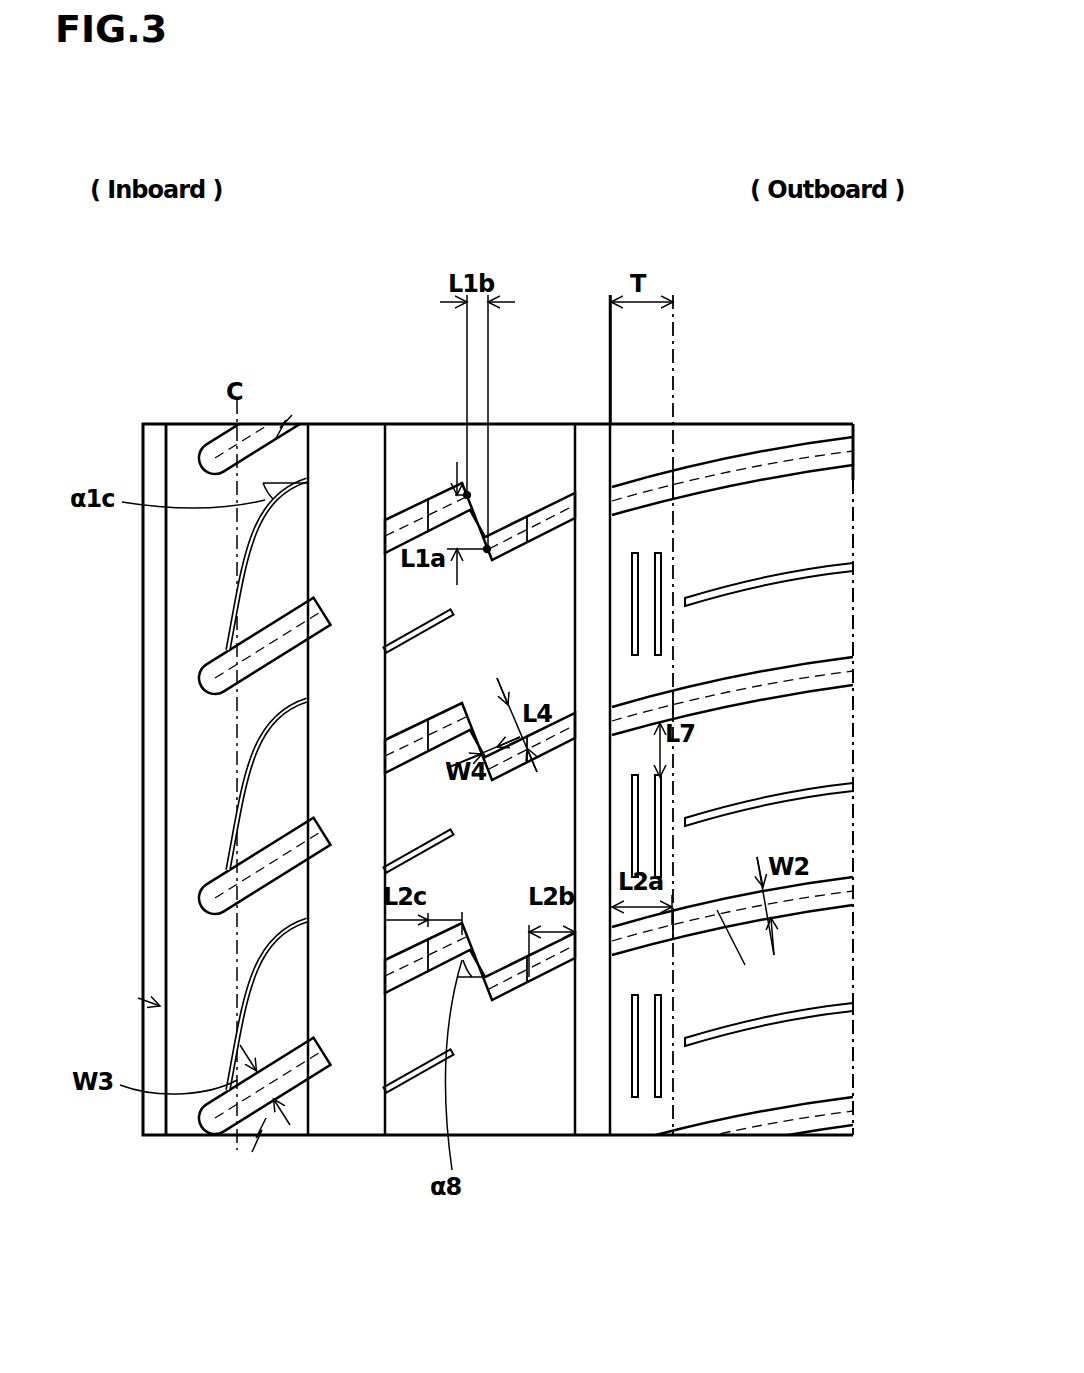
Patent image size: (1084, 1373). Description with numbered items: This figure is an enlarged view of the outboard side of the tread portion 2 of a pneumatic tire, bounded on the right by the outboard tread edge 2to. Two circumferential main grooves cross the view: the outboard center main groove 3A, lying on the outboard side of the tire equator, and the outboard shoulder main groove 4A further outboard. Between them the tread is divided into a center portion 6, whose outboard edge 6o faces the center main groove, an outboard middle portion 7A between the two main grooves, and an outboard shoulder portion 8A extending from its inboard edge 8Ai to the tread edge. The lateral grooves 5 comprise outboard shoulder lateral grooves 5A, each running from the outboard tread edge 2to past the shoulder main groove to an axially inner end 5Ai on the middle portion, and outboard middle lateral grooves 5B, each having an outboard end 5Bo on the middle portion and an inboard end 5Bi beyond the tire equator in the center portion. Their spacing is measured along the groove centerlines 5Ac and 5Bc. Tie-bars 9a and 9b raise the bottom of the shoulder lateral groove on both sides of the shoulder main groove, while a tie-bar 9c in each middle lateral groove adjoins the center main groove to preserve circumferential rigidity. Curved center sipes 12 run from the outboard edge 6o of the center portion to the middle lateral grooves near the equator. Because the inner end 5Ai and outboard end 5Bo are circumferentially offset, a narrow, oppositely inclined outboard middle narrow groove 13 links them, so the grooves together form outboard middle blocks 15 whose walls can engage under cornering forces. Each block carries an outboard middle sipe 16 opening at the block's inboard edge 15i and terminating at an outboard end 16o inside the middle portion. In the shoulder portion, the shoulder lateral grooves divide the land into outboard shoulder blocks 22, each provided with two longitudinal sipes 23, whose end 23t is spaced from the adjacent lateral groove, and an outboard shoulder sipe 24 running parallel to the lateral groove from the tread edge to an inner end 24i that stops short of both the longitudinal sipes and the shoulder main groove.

The tread portion 2 is at (812, 405).
The outboard tread edge 2to is at (853, 1075).
The outboard center main groove 3A is at (350, 1078).
The outboard shoulder main groove 4A is at (590, 1077).
The lateral grooves 5 is at (723, 913).
The outboard shoulder lateral groove 5A is at (785, 467).
The axially inner end of outboard shoulder lateral groove 5Ai is at (515, 505).
The groove centerline of outboard shoulder lateral groove 5Ac is at (753, 465).
The outboard middle lateral groove 5B is at (285, 600).
The inboard end of outboard middle lateral groove 5Bi is at (203, 1127).
The outboard end of outboard middle lateral groove 5Bo is at (466, 492).
The groove centerline of outboard middle lateral groove 5Bc is at (258, 630).
The center portion 6 is at (191, 470).
The outboard edge of center portion 6o is at (323, 424).
The outboard middle portion 7A is at (413, 455).
The outboard shoulder portion 8A is at (718, 518).
The inboard edge of outboard shoulder portion 8Ai is at (606, 455).
The tie-bar 9a is at (647, 485).
The tie-bar 9b is at (560, 962).
The tie-bar 9c is at (400, 970).
The center sipe 12 is at (250, 545).
The outboard middle narrow groove 13 is at (482, 520).
The outboard middle block 15 is at (307, 651).
The inboard edge of outboard middle block 15i is at (362, 425).
The outboard middle sipe 16 is at (307, 703).
The outboard end of outboard middle sipe 16o is at (383, 740).
The outboard shoulder block 22 is at (790, 632).
The longitudinal sipe 23 is at (637, 560).
The end of longitudinal sipe 23t is at (667, 773).
The outboard shoulder sipe 24 is at (783, 575).
The axially inner end of outboard shoulder sipe 24i is at (686, 603).